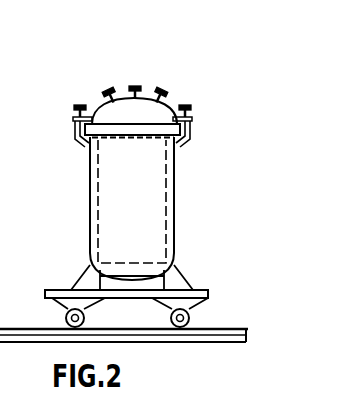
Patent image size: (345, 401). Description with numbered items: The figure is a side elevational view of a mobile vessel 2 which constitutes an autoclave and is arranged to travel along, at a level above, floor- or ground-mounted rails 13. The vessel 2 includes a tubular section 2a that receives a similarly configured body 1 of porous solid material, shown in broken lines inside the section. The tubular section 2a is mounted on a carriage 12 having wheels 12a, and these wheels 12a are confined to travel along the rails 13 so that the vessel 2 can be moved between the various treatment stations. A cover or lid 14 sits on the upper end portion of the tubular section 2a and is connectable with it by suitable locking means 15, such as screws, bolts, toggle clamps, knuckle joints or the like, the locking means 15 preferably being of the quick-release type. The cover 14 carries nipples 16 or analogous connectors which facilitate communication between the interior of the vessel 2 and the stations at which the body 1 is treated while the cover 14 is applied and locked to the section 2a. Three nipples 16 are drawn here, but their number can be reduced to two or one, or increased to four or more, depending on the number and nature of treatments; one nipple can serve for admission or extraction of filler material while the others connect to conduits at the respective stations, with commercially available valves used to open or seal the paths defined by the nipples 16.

The body of porous solid material 1 is at (113, 195).
The mobile vessel 2 is at (181, 207).
The tubular section 2a is at (175, 175).
The carriage 12 is at (208, 293).
The wheels 12a is at (197, 322).
The rails 13 is at (225, 344).
The cover 14 is at (160, 115).
The locking means 15 is at (195, 118).
The nipples 16 is at (158, 86).